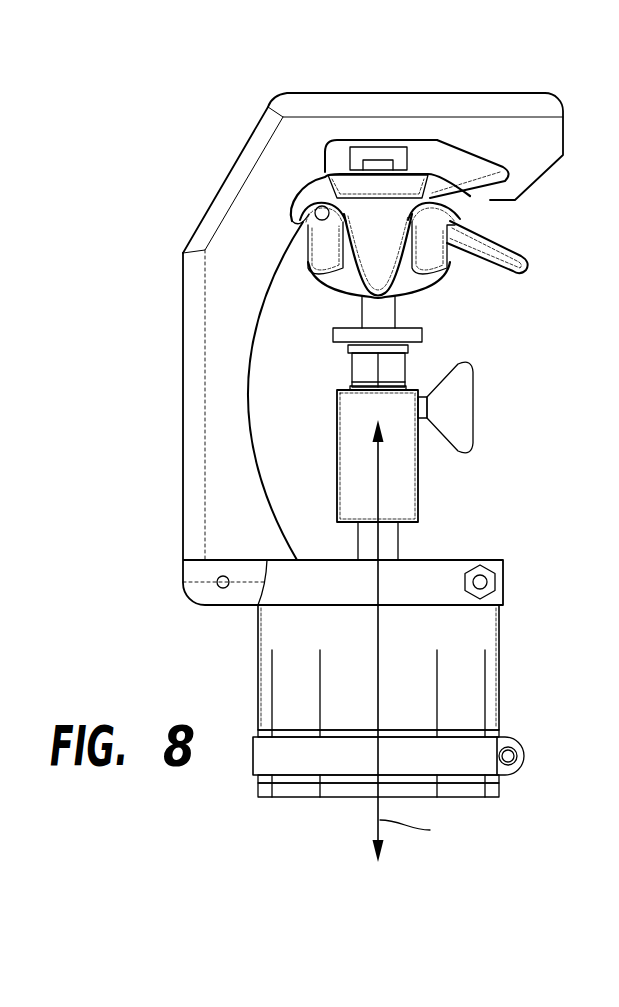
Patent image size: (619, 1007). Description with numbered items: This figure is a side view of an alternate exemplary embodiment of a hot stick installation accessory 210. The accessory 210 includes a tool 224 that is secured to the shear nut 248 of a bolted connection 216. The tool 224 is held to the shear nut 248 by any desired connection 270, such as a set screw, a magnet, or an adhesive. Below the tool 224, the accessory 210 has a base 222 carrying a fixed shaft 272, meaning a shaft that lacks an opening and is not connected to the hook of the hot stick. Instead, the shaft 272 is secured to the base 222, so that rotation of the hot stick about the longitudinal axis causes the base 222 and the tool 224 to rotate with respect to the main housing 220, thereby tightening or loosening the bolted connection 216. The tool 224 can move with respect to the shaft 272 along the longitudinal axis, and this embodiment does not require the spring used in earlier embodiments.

The hot stick installation accessory 210 is at (479, 68).
The main housing 220 is at (177, 325).
The bolted connection 216 is at (406, 372).
The shear nut 248 is at (352, 388).
The connection 270 is at (474, 410).
The tool 224 is at (428, 493).
The fixed shaft 272 is at (398, 545).
The base 222 is at (510, 666).